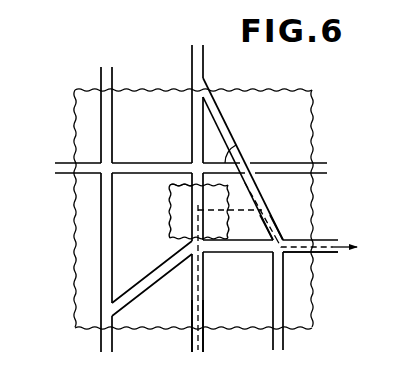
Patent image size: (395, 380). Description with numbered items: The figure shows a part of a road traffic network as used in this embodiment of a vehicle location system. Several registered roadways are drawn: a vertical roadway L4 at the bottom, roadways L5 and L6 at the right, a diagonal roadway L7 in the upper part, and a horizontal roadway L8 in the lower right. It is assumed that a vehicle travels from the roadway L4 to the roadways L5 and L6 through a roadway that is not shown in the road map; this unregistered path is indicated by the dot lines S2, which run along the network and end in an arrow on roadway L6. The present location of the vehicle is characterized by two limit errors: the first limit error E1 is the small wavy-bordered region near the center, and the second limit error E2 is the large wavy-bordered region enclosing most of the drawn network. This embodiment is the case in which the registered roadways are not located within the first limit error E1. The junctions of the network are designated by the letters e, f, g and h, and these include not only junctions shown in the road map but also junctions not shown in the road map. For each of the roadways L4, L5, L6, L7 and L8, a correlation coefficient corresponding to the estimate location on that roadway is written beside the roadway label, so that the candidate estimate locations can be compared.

The second limit error E2 is at (74, 94).
The first limit error E1 is at (170, 210).
The junction e is at (197, 200).
The junction f is at (230, 219).
The junction g is at (281, 227).
The junction h is at (247, 154).
The roadway L7 is at (230, 160).
The roadway L5 is at (262, 192).
The roadway L8 is at (270, 258).
The roadway L6 is at (317, 257).
The roadway L4 is at (209, 327).
The dot lines S2 is at (198, 300).